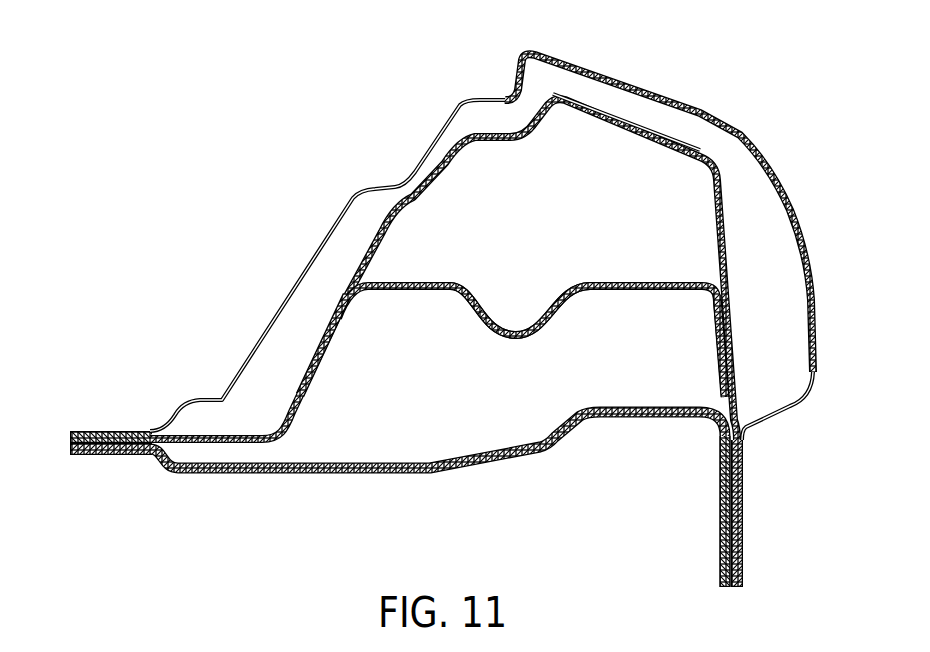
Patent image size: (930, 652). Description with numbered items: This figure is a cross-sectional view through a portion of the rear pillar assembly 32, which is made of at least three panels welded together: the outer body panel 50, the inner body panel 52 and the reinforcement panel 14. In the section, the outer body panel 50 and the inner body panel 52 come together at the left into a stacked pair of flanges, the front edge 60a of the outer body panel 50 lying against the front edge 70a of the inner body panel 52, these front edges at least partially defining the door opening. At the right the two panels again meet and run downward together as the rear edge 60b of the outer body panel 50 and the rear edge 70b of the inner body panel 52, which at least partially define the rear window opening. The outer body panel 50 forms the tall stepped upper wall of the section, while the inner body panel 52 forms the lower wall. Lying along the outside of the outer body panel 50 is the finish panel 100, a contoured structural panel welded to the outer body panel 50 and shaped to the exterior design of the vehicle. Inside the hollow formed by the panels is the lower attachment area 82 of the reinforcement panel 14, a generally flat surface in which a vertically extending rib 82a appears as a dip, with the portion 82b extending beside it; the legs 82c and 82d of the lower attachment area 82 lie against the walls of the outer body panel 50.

The rear pillar assembly 32 is at (208, 184).
The finish panel 100 is at (305, 276).
The outer body panel 50 is at (455, 170).
The lower attachment area 82 is at (421, 282).
The vertically extending rib 82a is at (500, 340).
The portion of the lower attachment section 82b is at (657, 282).
The left leg of frame 82c is at (340, 350).
The right leg of frame 82d is at (714, 350).
The reinforcement panel 14 is at (613, 282).
The inner body panel 52 is at (226, 474).
The front edge 60a is at (70, 438).
The front edge 70a is at (70, 450).
The rear edge 60b is at (732, 588).
The rear edge 70b is at (724, 588).